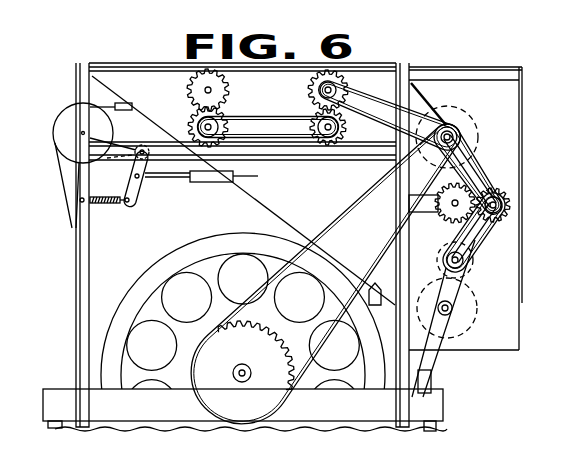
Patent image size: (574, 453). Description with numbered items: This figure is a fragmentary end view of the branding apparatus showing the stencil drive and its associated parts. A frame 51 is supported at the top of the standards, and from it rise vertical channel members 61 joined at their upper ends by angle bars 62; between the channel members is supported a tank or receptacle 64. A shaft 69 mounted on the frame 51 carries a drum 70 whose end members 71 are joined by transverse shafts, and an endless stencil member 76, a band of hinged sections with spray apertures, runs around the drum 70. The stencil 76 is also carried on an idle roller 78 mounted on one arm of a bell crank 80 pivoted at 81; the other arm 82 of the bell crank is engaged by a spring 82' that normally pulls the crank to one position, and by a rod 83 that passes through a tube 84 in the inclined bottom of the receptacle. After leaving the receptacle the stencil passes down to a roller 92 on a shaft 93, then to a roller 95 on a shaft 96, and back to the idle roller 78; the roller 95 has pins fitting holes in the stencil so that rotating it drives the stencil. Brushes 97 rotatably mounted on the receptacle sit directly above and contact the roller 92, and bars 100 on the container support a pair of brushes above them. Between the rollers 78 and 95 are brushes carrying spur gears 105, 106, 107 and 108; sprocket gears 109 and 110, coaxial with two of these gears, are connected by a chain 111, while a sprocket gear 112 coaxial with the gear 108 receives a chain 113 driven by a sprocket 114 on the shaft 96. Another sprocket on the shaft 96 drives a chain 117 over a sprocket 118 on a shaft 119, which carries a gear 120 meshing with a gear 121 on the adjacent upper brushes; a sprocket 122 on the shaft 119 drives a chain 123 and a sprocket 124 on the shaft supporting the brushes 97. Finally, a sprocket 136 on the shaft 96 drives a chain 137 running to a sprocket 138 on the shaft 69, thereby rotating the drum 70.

The frame 51 is at (446, 403).
The vertical channel members 61 is at (77, 263).
The angle bars 62 is at (497, 72).
The tank or receptacle 64 is at (135, 82).
The shaft 69 is at (240, 369).
The drum 70 is at (202, 243).
The end members 71 is at (200, 268).
The stencil member 76 is at (66, 212).
The idle roller 78 is at (56, 131).
The bell crank 80 is at (118, 140).
The pivot 81 is at (144, 148).
The arm 82 is at (141, 179).
The spring 82' is at (109, 211).
The rod 83 is at (170, 180).
The tube 84 is at (205, 183).
The roller 92 is at (468, 335).
The shaft 93 is at (449, 313).
The roller 95 is at (455, 108).
The shaft 96 is at (460, 125).
The brushes 97 is at (442, 260).
The bars 100 is at (440, 195).
The spur gear 105 is at (312, 84).
The spur gear 106 is at (336, 150).
The spur gear 107 is at (188, 88).
The spur gear 108 is at (193, 116).
The sprocket gear 109 is at (236, 121).
The sprocket gear 110 is at (309, 118).
The chain 111 is at (263, 117).
The sprocket gear 112 is at (345, 98).
The chain 113 is at (380, 100).
The sprocket 114 is at (429, 115).
The chain 117 is at (481, 158).
The sprocket 118 is at (506, 200).
The shaft 119 is at (512, 205).
The gear 120 is at (504, 218).
The gear 121 is at (447, 214).
The sprocket 122 is at (490, 182).
The chain 123 is at (473, 253).
The sprocket 124 is at (464, 268).
The sprocket 136 is at (434, 157).
The chain 137 is at (346, 216).
The sprocket 138 is at (281, 347).